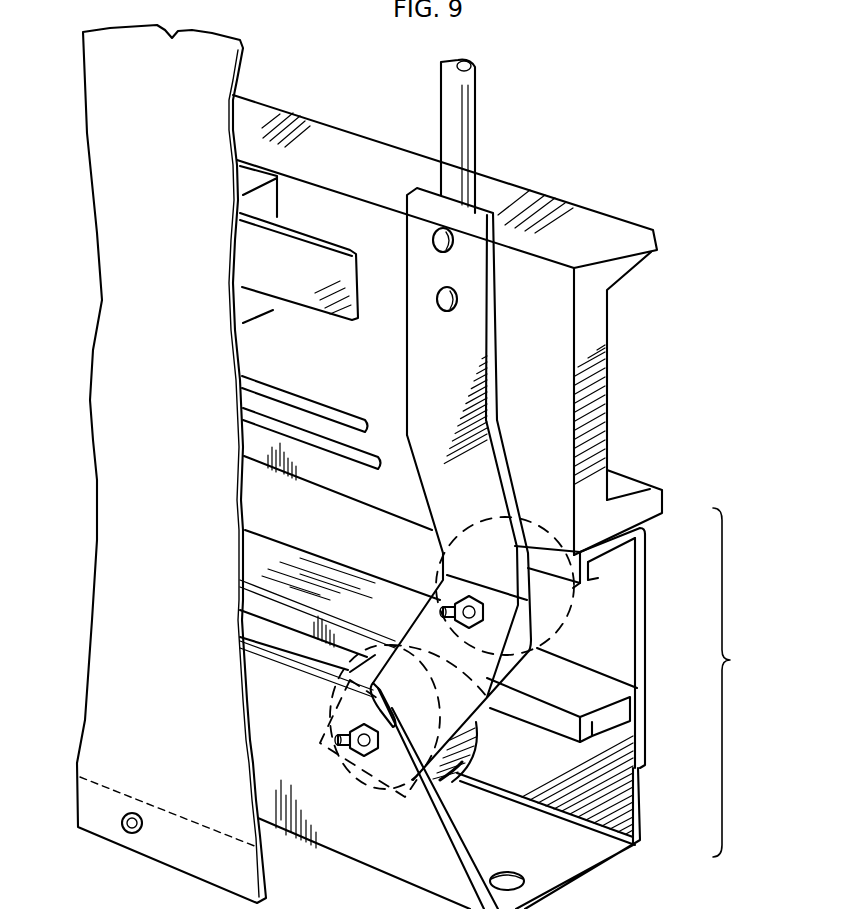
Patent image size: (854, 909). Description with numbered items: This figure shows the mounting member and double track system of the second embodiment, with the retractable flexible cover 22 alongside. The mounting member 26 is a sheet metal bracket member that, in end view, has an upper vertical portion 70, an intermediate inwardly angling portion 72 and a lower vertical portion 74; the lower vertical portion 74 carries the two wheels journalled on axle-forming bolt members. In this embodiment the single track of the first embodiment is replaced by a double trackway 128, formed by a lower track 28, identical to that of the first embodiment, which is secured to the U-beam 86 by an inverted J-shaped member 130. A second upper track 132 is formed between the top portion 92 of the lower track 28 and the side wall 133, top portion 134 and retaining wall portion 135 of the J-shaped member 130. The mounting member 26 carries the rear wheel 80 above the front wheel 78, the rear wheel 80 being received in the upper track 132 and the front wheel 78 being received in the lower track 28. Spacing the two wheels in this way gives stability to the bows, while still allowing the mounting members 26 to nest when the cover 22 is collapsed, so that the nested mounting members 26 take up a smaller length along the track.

The cover 22 is at (175, 374).
The mounting member 26 is at (505, 398).
The track 28 is at (640, 807).
The upper vertical portion 70 is at (467, 373).
The intermediate inwardly angling portion 72 is at (471, 495).
The lower vertical portion 74 is at (480, 704).
The front wheel 78 is at (460, 776).
The rear wheel 80 is at (515, 578).
The U-beam 86 is at (588, 308).
The top portion 92 is at (604, 722).
The double trackway 128 is at (751, 682).
The inverted J-shaped member 130 is at (655, 633).
The upper track 132 is at (646, 674).
The side wall 133 is at (625, 667).
The top portion 134 is at (616, 556).
The retaining wall portion 135 is at (590, 573).